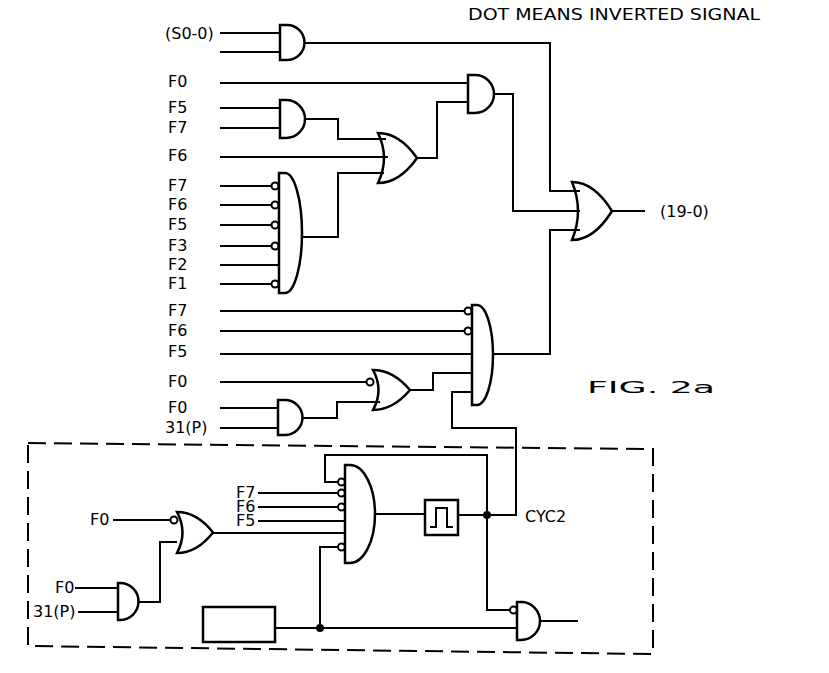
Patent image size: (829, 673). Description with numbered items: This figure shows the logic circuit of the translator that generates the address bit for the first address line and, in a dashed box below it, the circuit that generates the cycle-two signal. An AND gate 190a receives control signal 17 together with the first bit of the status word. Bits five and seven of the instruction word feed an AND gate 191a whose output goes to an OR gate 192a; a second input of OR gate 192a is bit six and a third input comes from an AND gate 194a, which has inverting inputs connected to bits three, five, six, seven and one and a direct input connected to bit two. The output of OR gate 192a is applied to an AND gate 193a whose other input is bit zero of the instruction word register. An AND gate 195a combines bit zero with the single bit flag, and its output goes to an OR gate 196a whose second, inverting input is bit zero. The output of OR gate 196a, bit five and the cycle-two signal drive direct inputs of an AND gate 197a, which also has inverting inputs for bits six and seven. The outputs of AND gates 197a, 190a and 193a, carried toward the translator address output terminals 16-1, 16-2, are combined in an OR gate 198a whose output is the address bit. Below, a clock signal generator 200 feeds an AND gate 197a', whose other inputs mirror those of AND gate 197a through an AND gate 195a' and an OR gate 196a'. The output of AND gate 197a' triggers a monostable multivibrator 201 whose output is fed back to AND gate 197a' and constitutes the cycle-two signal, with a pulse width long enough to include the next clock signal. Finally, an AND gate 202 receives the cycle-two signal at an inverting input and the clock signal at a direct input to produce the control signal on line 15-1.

The AND gate 190a is at (298, 38).
The AND gate 191a is at (292, 115).
The OR gate 192a is at (392, 147).
The AND gate 193a is at (482, 90).
The AND gate 194a is at (293, 272).
The AND gate 195a is at (329, 419).
The OR gate 196a is at (422, 400).
The AND gate 197a is at (516, 372).
The OR gate 198a is at (597, 218).
The address bit output terminal 16-1 is at (513, 185).
The address bit output terminal 16-2 is at (550, 277).
The control signal 17 is at (225, 51).
The AND gate 195a' is at (151, 588).
The OR gate 196a' is at (185, 515).
The AND gate 197a' is at (415, 541).
The clock signal generator 200 is at (231, 608).
The monostable multivibrator 201 is at (438, 500).
The AND gate 202 is at (530, 610).
The control signal line 15-1 is at (579, 621).